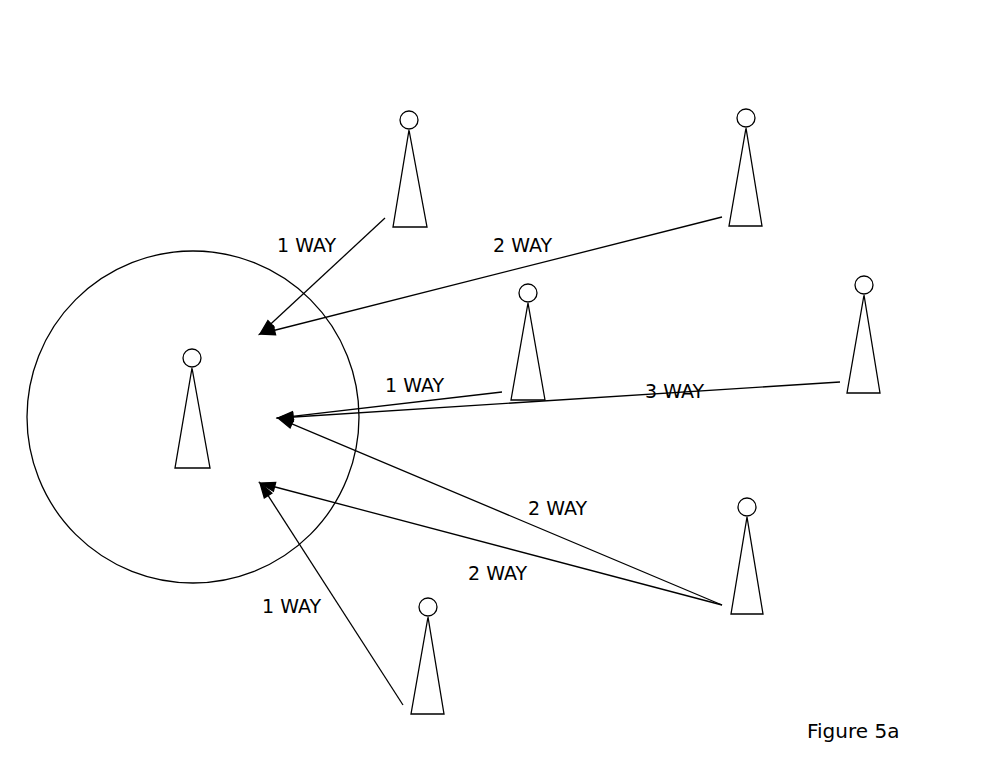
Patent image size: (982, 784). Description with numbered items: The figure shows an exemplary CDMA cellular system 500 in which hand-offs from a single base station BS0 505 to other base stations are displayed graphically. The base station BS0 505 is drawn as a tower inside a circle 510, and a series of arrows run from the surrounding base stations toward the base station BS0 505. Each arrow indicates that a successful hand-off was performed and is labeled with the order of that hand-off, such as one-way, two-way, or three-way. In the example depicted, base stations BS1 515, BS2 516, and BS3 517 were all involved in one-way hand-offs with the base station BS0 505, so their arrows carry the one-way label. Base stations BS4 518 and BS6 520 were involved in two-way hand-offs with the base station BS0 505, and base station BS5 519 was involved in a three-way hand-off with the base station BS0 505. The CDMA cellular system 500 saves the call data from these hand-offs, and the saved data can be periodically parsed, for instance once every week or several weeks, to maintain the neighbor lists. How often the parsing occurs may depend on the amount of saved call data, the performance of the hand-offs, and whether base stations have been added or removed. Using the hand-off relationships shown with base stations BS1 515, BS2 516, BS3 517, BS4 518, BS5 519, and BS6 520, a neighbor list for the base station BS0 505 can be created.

The CDMA cellular system 500 is at (117, 84).
The base station BS0 505 is at (184, 402).
The coverage area of base station BS0 510 is at (192, 251).
The base station BS1 515 is at (400, 160).
The base station BS2 516 is at (518, 334).
The base station BS3 517 is at (418, 647).
The base station BS4 518 is at (737, 160).
The base station BS5 519 is at (855, 324).
The base station BS6 520 is at (738, 548).